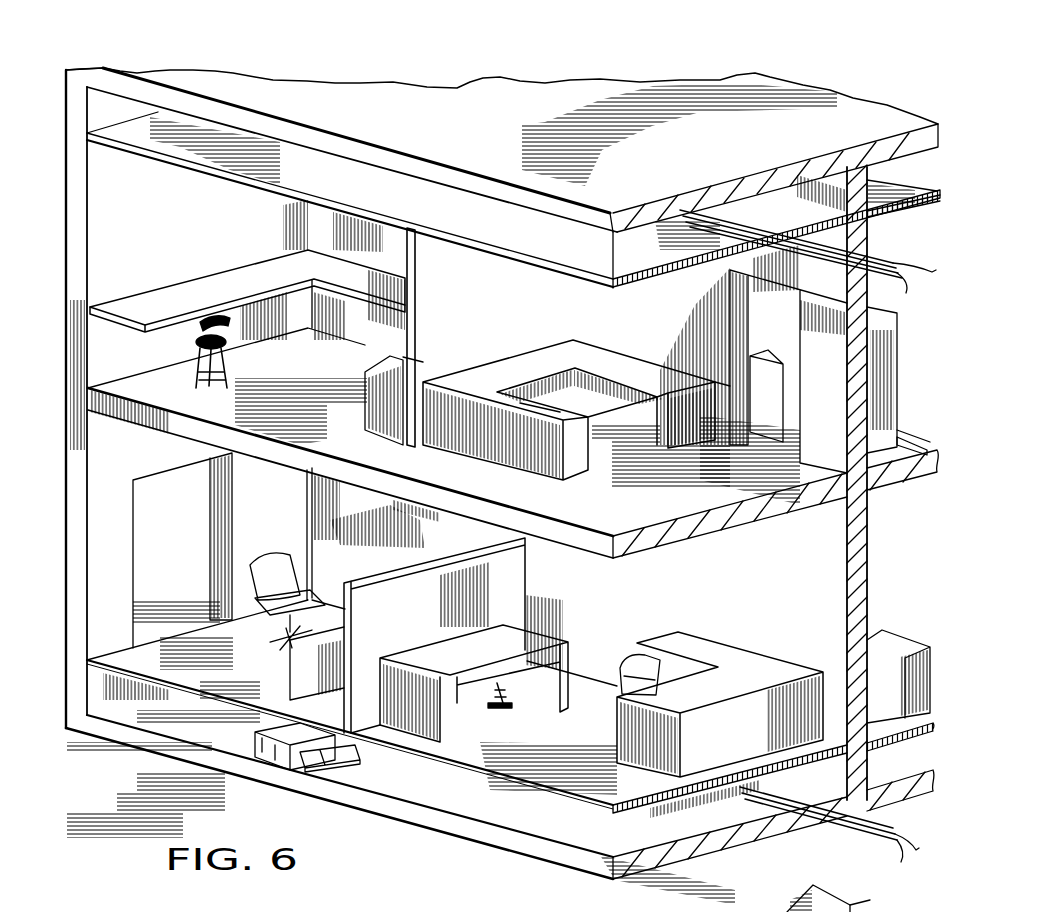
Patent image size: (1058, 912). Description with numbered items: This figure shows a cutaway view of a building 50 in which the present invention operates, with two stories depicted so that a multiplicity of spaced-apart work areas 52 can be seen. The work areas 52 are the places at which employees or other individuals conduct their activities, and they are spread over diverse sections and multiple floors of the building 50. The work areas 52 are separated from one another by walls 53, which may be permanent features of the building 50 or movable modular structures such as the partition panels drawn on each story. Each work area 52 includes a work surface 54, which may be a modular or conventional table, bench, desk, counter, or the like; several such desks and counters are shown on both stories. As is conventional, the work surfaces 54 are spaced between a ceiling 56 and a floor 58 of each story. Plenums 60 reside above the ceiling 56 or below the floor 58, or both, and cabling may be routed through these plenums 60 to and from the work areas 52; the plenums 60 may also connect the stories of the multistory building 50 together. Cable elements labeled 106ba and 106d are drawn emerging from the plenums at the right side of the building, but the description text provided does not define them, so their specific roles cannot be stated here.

The building 50 is at (500, 851).
The work area 52 is at (322, 373).
The wall 53 is at (153, 276).
The work surface 54 is at (385, 367).
The ceiling 56 is at (201, 181).
The floor 58 is at (513, 484).
The plenum 60 is at (397, 203).
The cable 106ba is at (781, 898).
The cable connector 106d is at (870, 898).